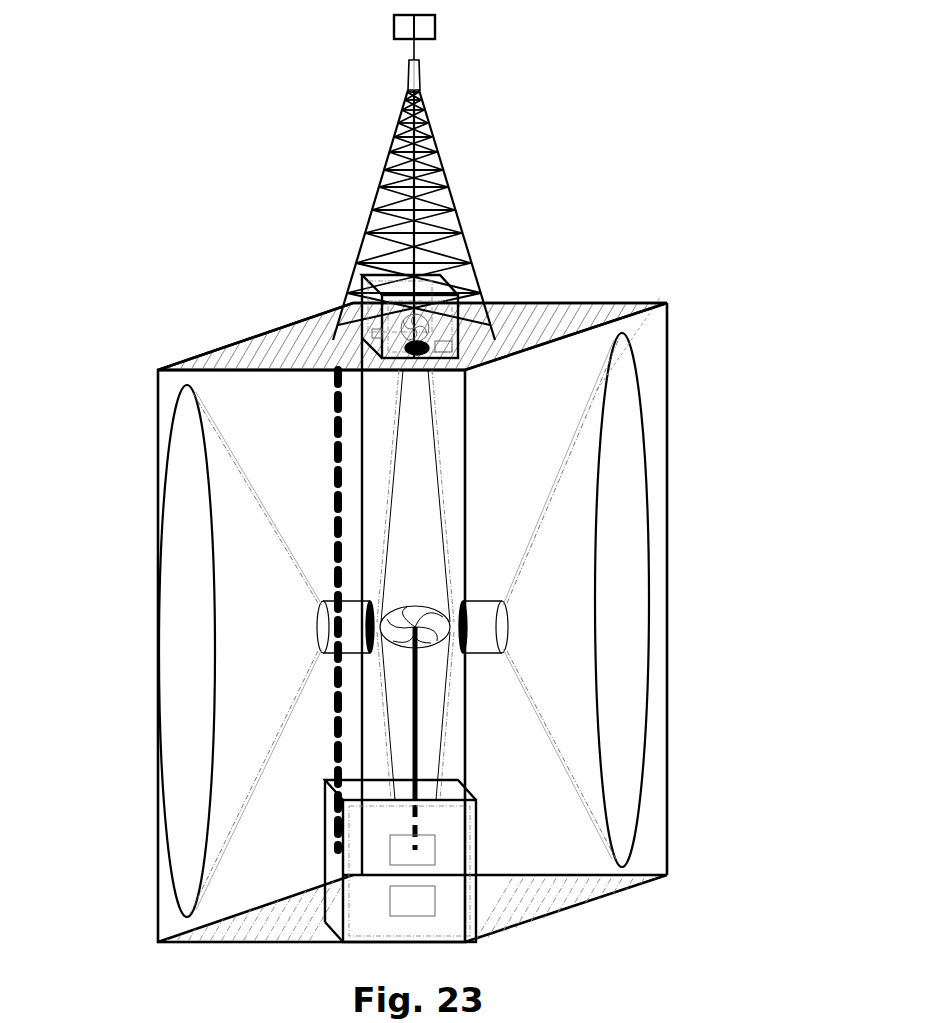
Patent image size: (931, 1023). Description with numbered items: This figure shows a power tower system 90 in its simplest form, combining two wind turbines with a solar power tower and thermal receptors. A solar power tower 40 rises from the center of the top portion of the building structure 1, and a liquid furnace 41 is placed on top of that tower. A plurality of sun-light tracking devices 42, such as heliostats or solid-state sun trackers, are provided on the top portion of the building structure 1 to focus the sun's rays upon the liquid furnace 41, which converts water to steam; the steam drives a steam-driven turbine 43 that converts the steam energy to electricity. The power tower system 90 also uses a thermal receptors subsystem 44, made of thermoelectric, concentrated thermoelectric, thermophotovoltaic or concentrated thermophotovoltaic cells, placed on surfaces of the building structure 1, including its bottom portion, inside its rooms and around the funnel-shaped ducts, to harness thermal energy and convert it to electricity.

The building structure 1 is at (650, 330).
The solar power tower 40 is at (440, 144).
The liquid furnace 41 is at (380, 29).
The sun-light tracking devices 42 is at (228, 357).
The steam-driven turbine 43 is at (460, 342).
The thermal receptors subsystem 44 is at (283, 556).
The power tower system 90 is at (253, 325).